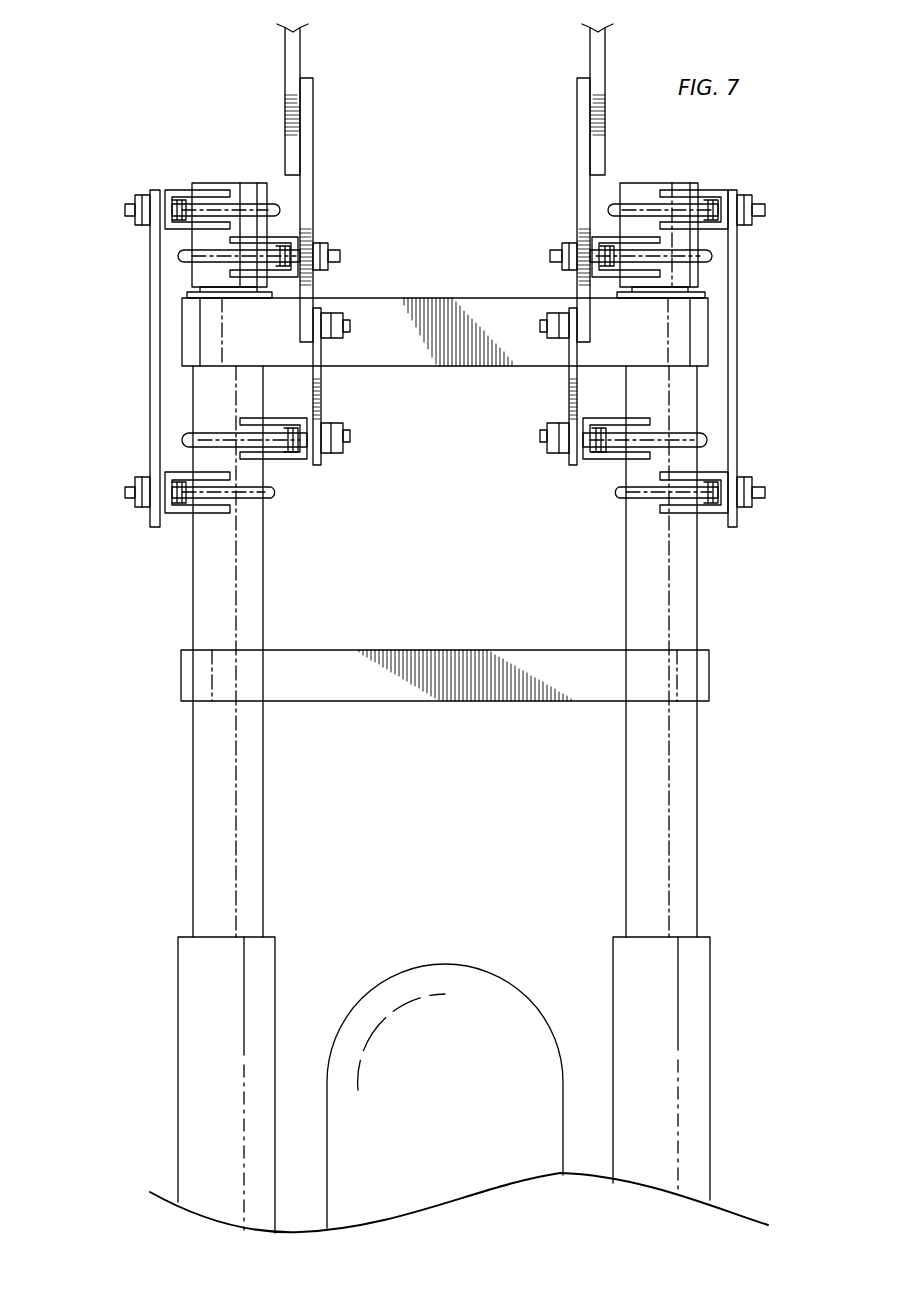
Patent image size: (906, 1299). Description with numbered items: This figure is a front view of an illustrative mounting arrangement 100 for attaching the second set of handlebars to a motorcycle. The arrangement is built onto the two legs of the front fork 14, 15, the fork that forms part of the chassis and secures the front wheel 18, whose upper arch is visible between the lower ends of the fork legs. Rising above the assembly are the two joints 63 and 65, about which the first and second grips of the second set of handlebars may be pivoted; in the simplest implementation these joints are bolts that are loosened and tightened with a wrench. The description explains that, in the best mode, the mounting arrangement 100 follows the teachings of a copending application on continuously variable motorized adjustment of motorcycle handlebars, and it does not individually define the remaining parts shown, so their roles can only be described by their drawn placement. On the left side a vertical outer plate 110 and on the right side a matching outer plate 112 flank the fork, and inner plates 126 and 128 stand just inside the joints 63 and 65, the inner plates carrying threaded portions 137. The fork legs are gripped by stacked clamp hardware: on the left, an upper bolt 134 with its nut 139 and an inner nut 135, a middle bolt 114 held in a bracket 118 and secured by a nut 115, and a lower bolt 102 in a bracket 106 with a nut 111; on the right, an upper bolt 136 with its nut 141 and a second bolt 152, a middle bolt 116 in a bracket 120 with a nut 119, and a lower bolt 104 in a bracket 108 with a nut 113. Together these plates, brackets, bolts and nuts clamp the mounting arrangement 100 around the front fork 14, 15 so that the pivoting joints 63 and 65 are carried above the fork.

The fork clamp assembly 100 is at (80, 208).
The front fork 14 is at (252, 555).
The front fork 15 is at (630, 568).
The wheel 18 is at (433, 973).
The joint 63 is at (285, 57).
The joint 65 is at (605, 58).
The lower left bolt 102 is at (277, 493).
The lower right bolt 104 is at (613, 492).
The lower left bracket 106 is at (180, 512).
The lower right bracket 108 is at (710, 513).
The left side plate 110 is at (150, 442).
The lower left nut 111 is at (133, 500).
The right side plate 112 is at (737, 342).
The lower right nut 113 is at (755, 508).
The middle left bolt 114 is at (189, 440).
The middle left nut 115 is at (328, 453).
The middle right bolt 116 is at (705, 441).
The middle left bracket 118 is at (296, 418).
The middle right nut 119 is at (560, 455).
The middle right bracket 120 is at (605, 418).
The left inner plate 126 is at (313, 287).
The right inner plate 128 is at (577, 190).
The upper left bolt 134 is at (280, 210).
The upper left inner nut 135 is at (322, 243).
The upper right bolt 136 is at (612, 207).
The threaded portion 137 is at (568, 288).
The upper left nut 139 is at (140, 195).
The upper right nut 141 is at (750, 196).
The upper right inner bolt 152 is at (712, 256).